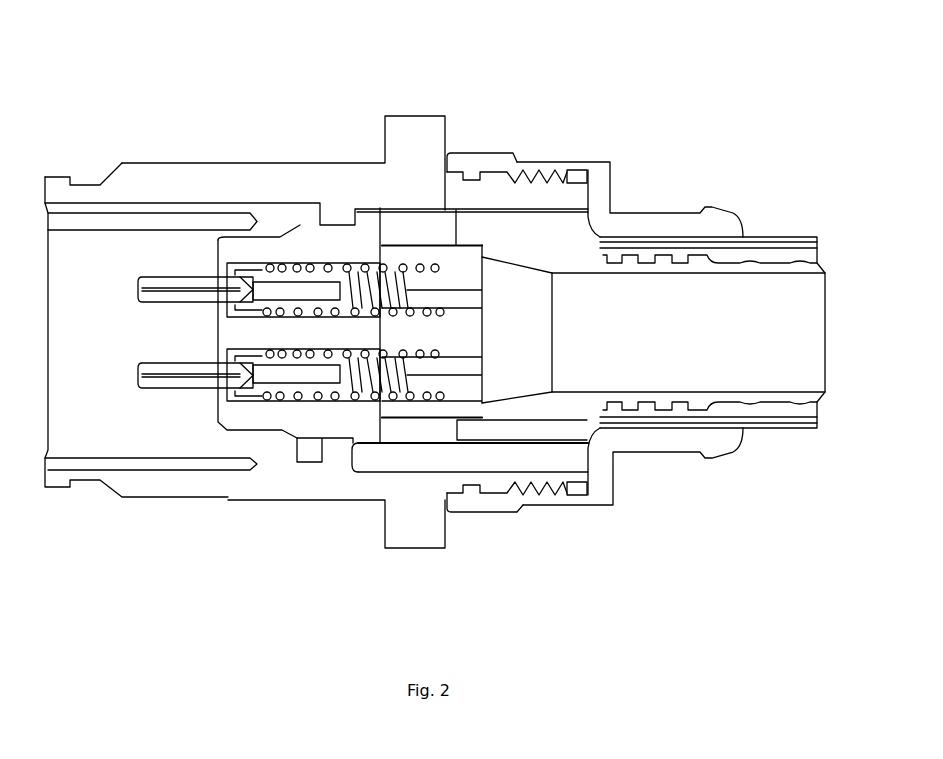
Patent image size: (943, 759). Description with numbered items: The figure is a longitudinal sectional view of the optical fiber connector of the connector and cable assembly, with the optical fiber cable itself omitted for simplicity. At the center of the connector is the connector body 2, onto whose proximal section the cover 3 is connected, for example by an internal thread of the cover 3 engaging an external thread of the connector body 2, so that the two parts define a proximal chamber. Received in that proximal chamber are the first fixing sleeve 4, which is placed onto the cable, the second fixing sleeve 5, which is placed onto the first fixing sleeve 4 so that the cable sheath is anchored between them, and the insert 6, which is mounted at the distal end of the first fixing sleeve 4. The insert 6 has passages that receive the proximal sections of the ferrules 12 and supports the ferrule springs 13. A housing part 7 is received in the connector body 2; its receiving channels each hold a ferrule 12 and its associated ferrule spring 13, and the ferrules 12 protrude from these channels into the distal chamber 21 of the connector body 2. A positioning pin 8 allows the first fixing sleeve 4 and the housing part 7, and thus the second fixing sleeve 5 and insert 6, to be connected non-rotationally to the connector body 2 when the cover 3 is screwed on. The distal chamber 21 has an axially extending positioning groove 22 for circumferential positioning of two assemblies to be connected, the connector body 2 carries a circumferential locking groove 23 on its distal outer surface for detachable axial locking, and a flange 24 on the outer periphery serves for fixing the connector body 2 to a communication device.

The connector body 2 is at (420, 140).
The cover 3 is at (610, 168).
The first fixing sleeve 4 is at (507, 230).
The second fixing sleeve 5 is at (772, 258).
The insert 6 is at (467, 267).
The housing part 7 is at (331, 247).
The positioning pin 8 is at (497, 457).
The ferrule 12 is at (177, 288).
The ferrule spring 13 is at (310, 266).
The distal chamber 21 is at (147, 415).
The positioning groove 22 is at (120, 225).
The locking groove 23 is at (90, 482).
The flange 24 is at (412, 525).